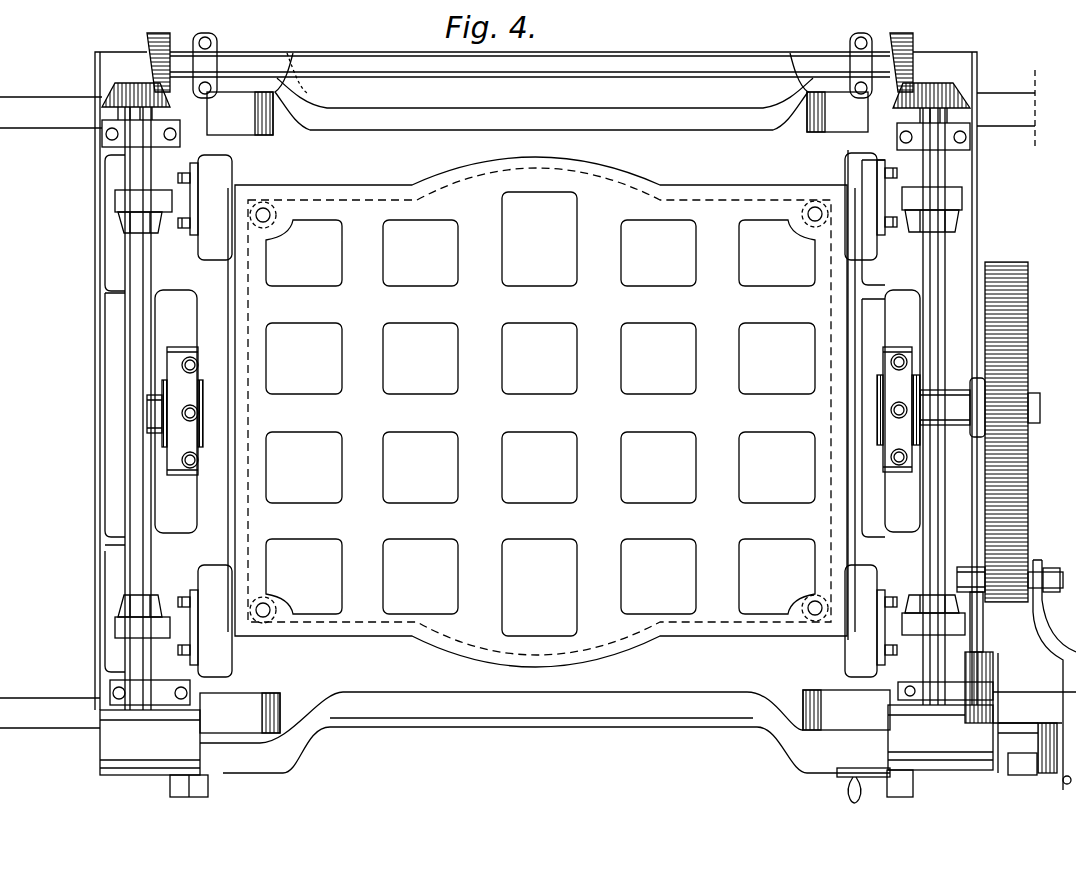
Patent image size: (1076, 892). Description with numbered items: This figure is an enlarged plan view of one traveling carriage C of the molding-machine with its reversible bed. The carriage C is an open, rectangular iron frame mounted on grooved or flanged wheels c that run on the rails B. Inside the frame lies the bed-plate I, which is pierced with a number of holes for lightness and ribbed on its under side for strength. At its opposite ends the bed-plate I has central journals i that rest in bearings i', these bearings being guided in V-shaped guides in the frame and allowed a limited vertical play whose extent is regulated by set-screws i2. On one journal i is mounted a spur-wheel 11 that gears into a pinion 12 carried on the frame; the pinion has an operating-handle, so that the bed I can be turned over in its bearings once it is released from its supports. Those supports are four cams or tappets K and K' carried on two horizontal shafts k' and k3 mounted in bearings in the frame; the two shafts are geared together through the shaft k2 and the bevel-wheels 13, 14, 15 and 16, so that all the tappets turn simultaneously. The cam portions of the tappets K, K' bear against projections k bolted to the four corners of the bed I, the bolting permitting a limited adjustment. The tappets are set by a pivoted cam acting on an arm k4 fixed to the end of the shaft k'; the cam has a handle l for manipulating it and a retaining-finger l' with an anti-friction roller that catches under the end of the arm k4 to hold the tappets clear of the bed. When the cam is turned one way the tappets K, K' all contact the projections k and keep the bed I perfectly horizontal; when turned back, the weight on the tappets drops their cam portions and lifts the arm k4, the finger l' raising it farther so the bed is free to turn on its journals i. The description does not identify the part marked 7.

The traveling carriage C is at (533, 412).
The grooved or flanged wheels c is at (545, 412).
The rails B is at (538, 399).
The bed-plate I is at (541, 412).
The central journals i is at (608, 518).
The bearings i' is at (541, 411).
The set-screws i2 is at (539, 411).
The projections k is at (535, 415).
The horizontal shaft k' is at (943, 406).
The shaft k2 is at (530, 54).
The horizontal shaft k3 is at (127, 408).
The arm k4 is at (997, 674).
The cams or tappets K is at (933, 412).
The cams or tappets K' is at (143, 414).
The handle l is at (1026, 713).
The retaining-finger l' is at (1015, 774).
The lever with weight 7 is at (863, 777).
The spur-wheel 11 is at (1019, 432).
The pinion 12 is at (986, 595).
The bevel-wheel 13 is at (933, 94).
The bevel-wheel 14 is at (906, 58).
The bevel-wheel 15 is at (153, 62).
The bevel-wheel 16 is at (131, 95).